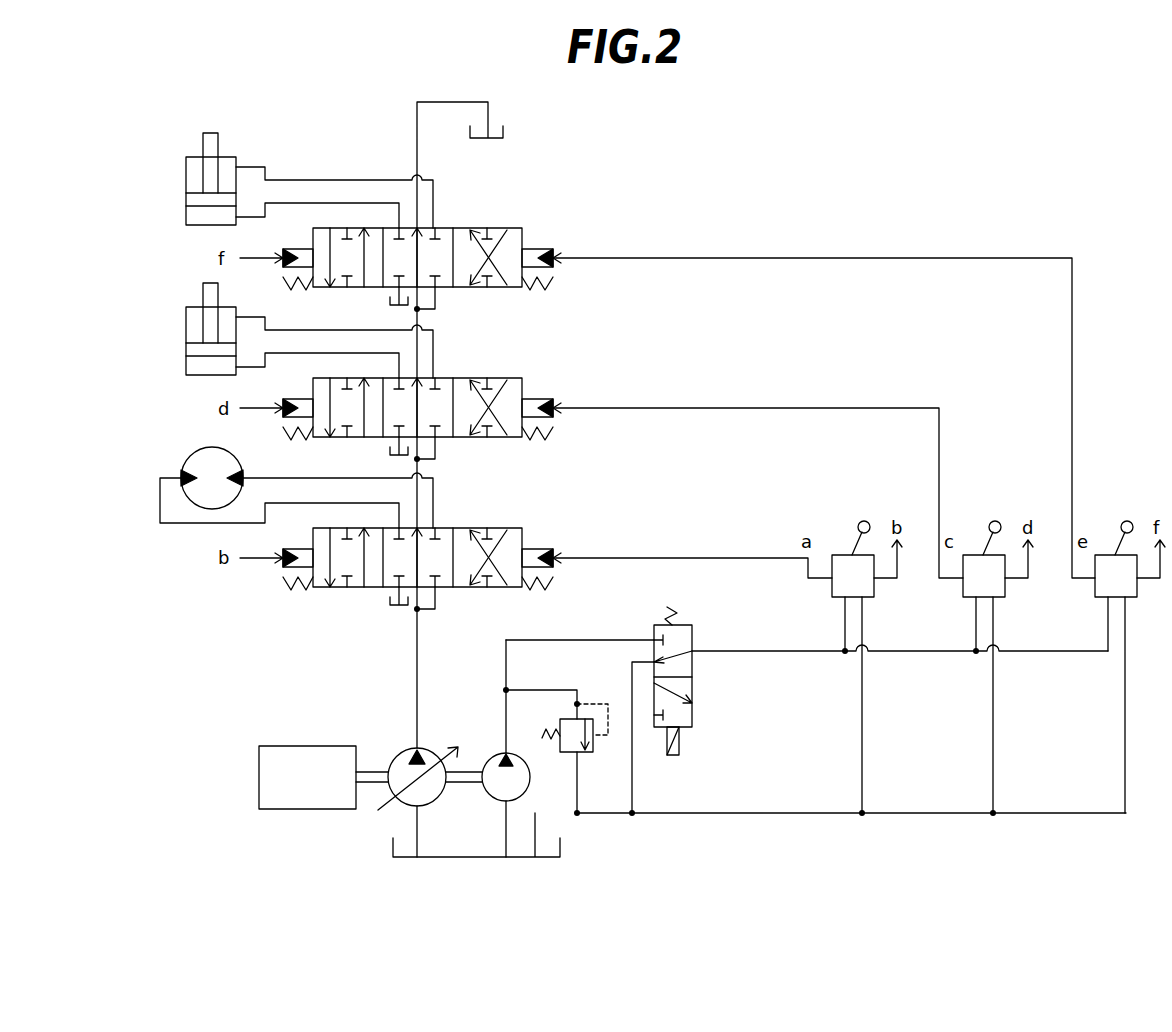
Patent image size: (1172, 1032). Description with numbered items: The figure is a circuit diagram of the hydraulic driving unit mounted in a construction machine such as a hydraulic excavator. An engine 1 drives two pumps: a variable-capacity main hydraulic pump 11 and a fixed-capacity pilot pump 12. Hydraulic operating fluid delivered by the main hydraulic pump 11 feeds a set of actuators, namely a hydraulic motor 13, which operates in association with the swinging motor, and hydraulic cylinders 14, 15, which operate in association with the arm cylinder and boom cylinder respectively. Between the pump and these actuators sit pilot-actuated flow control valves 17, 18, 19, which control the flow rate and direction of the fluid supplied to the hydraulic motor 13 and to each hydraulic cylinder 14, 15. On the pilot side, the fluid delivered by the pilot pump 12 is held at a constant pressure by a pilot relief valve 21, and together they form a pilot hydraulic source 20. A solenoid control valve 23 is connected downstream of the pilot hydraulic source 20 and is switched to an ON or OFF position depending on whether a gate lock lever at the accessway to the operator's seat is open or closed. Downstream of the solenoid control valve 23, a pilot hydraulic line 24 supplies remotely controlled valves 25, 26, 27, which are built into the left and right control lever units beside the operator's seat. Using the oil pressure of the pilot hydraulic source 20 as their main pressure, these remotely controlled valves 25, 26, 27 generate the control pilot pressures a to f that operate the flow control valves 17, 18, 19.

The engine 1 is at (309, 809).
The main hydraulic pump 11 is at (400, 756).
The pilot pump 12 is at (493, 760).
The hydraulic motor 13 is at (185, 462).
The hydraulic cylinder 14 is at (186, 327).
The hydraulic cylinder 15 is at (186, 177).
The flow control valve 17 is at (519, 528).
The flow control valve 18 is at (519, 378).
The flow control valve 19 is at (519, 228).
The pilot hydraulic source 20 is at (590, 640).
The pilot relief valve 21 is at (593, 745).
The solenoid control valve 23 is at (692, 688).
The pilot hydraulic line 24 is at (797, 652).
The remotely controlled valve 25 is at (832, 592).
The remotely controlled valve 26 is at (963, 592).
The remotely controlled valve 27 is at (1095, 592).